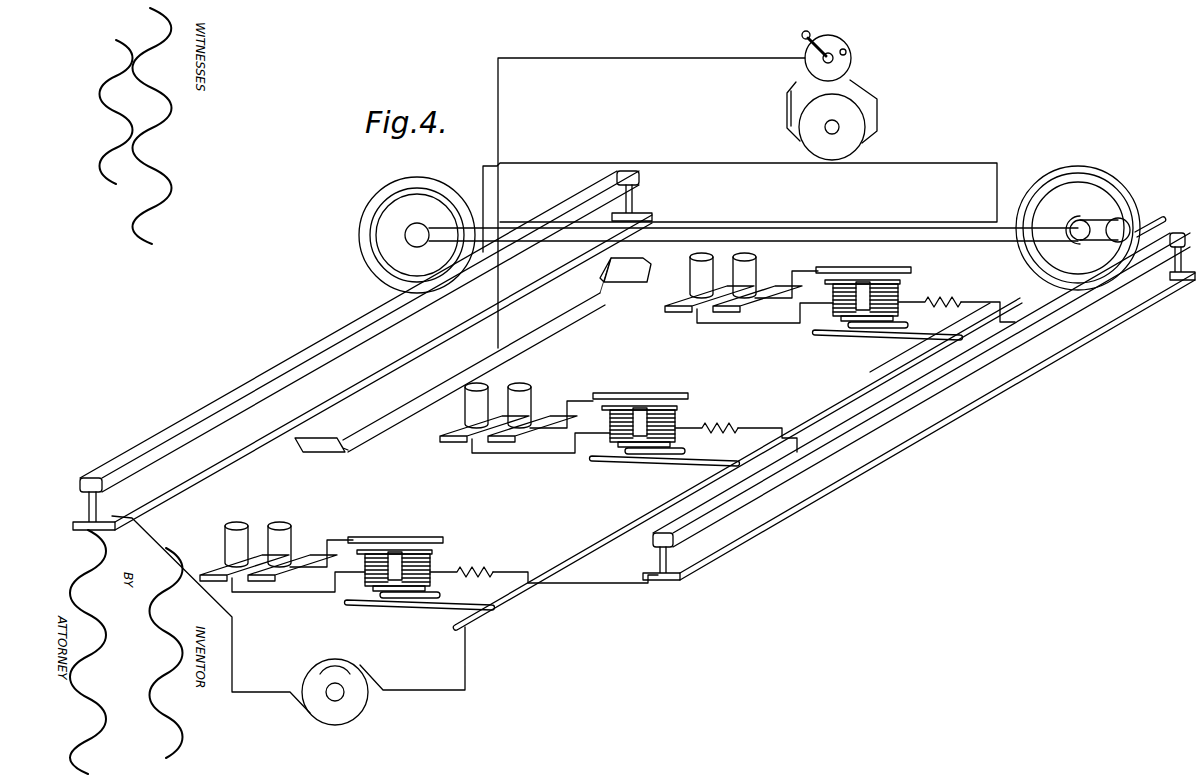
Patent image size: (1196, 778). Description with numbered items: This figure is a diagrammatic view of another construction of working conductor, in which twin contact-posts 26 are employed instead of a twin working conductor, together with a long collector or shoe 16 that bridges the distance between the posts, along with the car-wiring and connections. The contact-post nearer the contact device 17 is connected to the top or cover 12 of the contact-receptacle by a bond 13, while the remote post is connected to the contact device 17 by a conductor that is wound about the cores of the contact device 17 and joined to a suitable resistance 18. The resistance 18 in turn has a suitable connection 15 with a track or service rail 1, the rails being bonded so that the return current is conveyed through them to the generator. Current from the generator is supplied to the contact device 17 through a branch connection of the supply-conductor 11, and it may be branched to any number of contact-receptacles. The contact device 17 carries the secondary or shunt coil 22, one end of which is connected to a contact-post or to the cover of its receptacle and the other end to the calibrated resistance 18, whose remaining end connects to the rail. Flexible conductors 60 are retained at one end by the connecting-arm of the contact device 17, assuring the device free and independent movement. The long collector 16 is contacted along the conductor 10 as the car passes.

The track or service rail 1 is at (294, 410).
The contact conductor strip 10 is at (809, 423).
The supply-conductor 11 is at (911, 350).
The top or cover 12 is at (629, 395).
The bond 13 is at (554, 419).
The connection 15 is at (754, 435).
The long collector or shoe 16 is at (370, 430).
The contact device 17 is at (898, 292).
The resistance 18 is at (695, 430).
The secondary or shunt coil 22 is at (532, 459).
The contact-posts 26 is at (738, 275).
The flexible conductors 60 is at (650, 478).